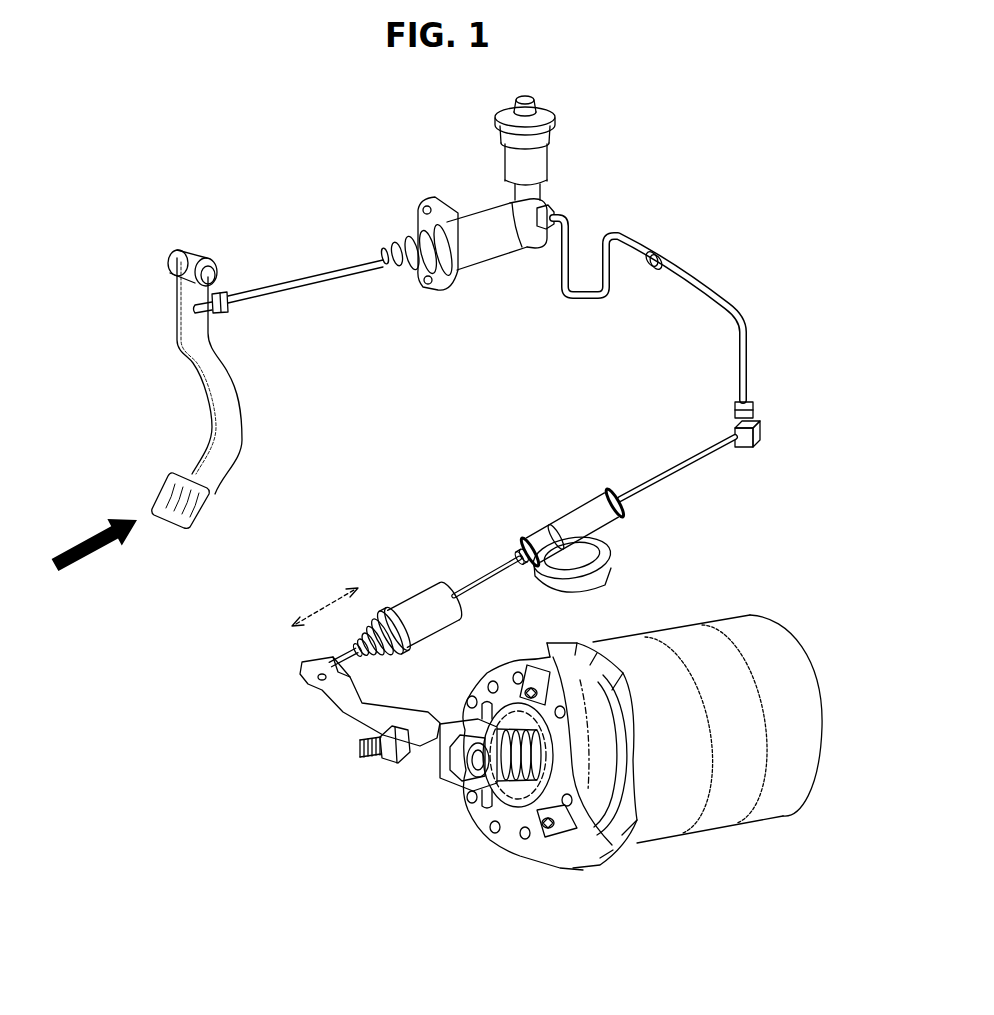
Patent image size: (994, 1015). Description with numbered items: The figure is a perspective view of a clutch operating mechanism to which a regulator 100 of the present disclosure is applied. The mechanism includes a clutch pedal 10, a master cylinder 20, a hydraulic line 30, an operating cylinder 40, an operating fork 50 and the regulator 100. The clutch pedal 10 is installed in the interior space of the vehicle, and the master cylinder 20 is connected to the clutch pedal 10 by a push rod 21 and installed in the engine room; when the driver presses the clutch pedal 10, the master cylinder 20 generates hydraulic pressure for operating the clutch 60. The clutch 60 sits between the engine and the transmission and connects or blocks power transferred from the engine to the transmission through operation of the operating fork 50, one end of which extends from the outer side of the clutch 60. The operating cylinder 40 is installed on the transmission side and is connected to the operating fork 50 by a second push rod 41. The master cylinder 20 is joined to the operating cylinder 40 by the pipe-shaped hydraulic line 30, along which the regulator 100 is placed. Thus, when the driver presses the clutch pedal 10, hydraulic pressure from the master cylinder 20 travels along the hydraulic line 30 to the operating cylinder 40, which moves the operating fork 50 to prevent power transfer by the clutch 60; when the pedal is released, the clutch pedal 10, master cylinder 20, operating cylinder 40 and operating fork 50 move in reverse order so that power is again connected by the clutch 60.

The clutch pedal 10 is at (222, 462).
The master cylinder 20 is at (478, 222).
The push rod 21 is at (297, 283).
The hydraulic line 30 is at (693, 287).
The operating cylinder 40 is at (423, 603).
The push rod 41 is at (352, 664).
The operating fork 50 is at (352, 718).
The clutch 60 is at (532, 868).
The regulator 100 is at (556, 500).